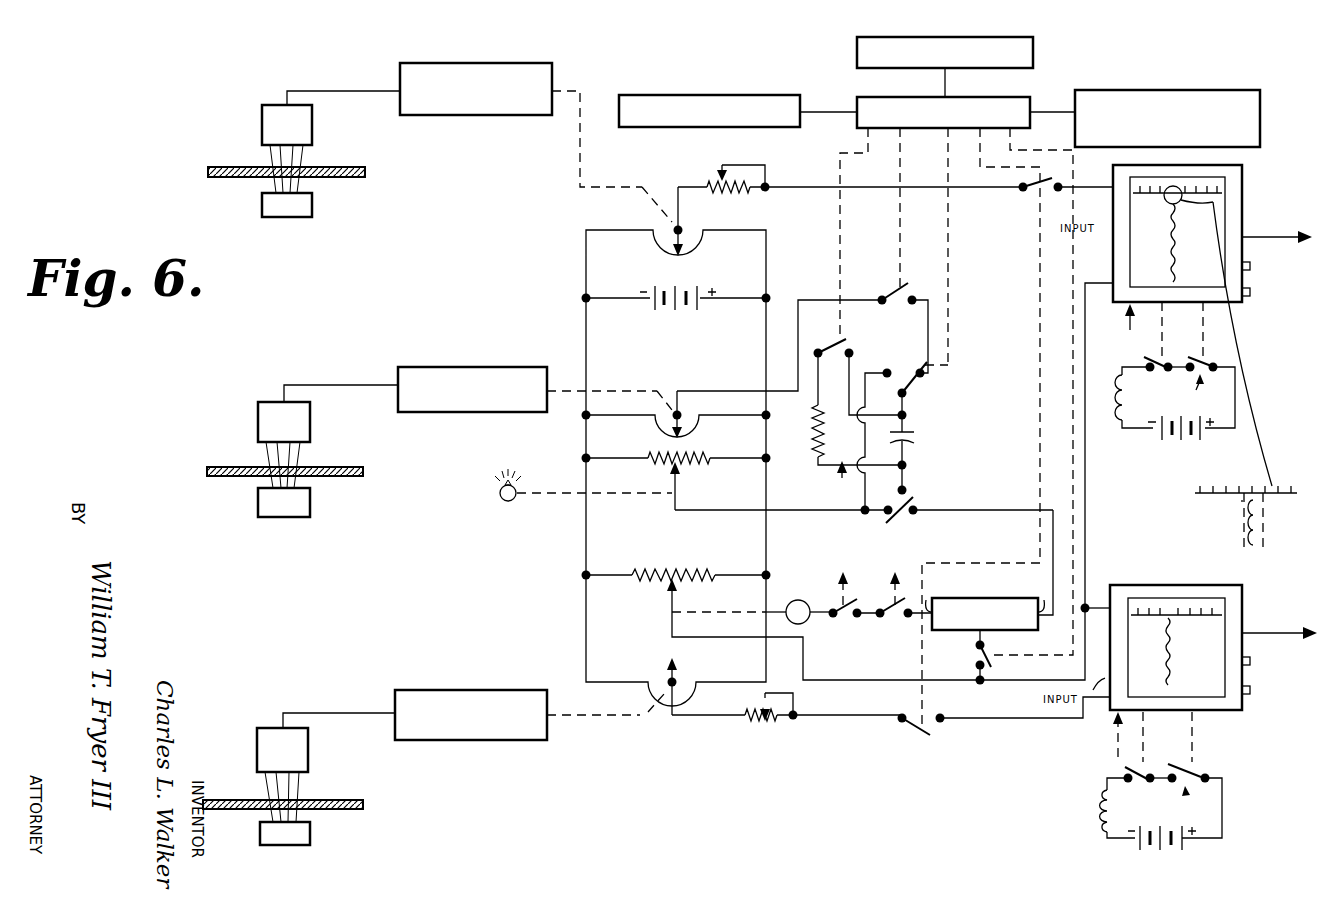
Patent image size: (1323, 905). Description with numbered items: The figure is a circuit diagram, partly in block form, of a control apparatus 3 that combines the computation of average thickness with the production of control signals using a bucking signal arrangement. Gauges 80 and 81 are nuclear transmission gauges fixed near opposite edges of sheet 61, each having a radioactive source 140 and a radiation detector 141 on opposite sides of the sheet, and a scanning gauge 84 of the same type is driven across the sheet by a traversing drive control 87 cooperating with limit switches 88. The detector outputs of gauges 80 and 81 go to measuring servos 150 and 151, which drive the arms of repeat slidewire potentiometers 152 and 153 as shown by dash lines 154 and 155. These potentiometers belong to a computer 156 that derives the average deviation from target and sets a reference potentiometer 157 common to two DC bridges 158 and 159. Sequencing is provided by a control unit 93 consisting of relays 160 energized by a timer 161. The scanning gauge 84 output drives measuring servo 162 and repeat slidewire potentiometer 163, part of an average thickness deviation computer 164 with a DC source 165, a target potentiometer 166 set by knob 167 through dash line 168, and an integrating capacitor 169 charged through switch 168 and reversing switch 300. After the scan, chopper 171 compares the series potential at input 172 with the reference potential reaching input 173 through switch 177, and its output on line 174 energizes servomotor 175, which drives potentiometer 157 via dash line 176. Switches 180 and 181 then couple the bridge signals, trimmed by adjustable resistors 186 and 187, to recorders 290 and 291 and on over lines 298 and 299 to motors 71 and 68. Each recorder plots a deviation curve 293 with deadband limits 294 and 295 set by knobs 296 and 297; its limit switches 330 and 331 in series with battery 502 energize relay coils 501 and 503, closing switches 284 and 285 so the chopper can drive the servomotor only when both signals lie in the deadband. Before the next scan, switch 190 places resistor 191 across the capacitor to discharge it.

The control apparatus 3 is at (648, 67).
The sheet 61 is at (338, 170).
The motor 68 is at (1296, 662).
The motor 71 is at (1279, 270).
The gauge 80 is at (268, 94).
The gauge 81 is at (300, 680).
The scanning gauge 84 is at (320, 418).
The traversing drive control 87 is at (1245, 76).
The limit switches 88 is at (770, 95).
The control unit 93 is at (1046, 93).
The radioactive source 140 is at (314, 205).
The radiation detector 141 is at (314, 125).
The measuring servo 150 is at (566, 60).
The measuring servo 151 is at (458, 692).
The repeat slidewire potentiometer 152 is at (655, 225).
The repeat slidewire potentiometer 153 is at (684, 687).
The dash line 154 is at (582, 146).
The dash line 155 is at (634, 720).
The computer 156 is at (649, 537).
The reference potentiometer 157 is at (663, 597).
The DC bridge 158 is at (588, 280).
The DC bridge 159 is at (587, 620).
The relays 160 is at (1026, 108).
The timer 161 is at (1033, 50).
The measuring servo 162 is at (415, 368).
The repeat slidewire potentiometer 163 is at (666, 429).
The average thickness deviation computer 164 is at (840, 480).
The DC source 165 is at (712, 287).
The target potentiometer 166 is at (684, 470).
The target set knob 167 is at (512, 502).
The switch 168 is at (916, 285).
The integrating capacitor 169 is at (918, 432).
The chopper 171 is at (992, 570).
The input 172 is at (1040, 598).
The input 173 is at (976, 646).
The line 174 is at (943, 592).
The servomotor 175 is at (790, 600).
The dash line 176 is at (750, 614).
The switch 177 is at (988, 667).
The switch 180 is at (1032, 195).
The switch 181 is at (922, 736).
The adjustable resistor 186 is at (767, 185).
The adjustable resistor 187 is at (765, 722).
The switch 190 is at (846, 345).
The resistor 191 is at (814, 428).
The switch 284 is at (842, 622).
The switch 285 is at (896, 622).
The recorder 290 is at (1243, 214).
The recorder 291 is at (1218, 578).
The curve 293 is at (1258, 545).
The deadband limit 294 is at (1244, 521).
The deadband limit 295 is at (1263, 505).
The knob 296 is at (1250, 266).
The knob 297 is at (1250, 292).
The line 298 is at (1276, 237).
The line 299 is at (1270, 633).
The reversing switch 300 is at (985, 366).
The limit switch 330 is at (1157, 584).
The limit switch 331 is at (1202, 597).
The relay coil 501 is at (1115, 428).
The battery 502 is at (1204, 442).
The relay coil 503 is at (1098, 810).